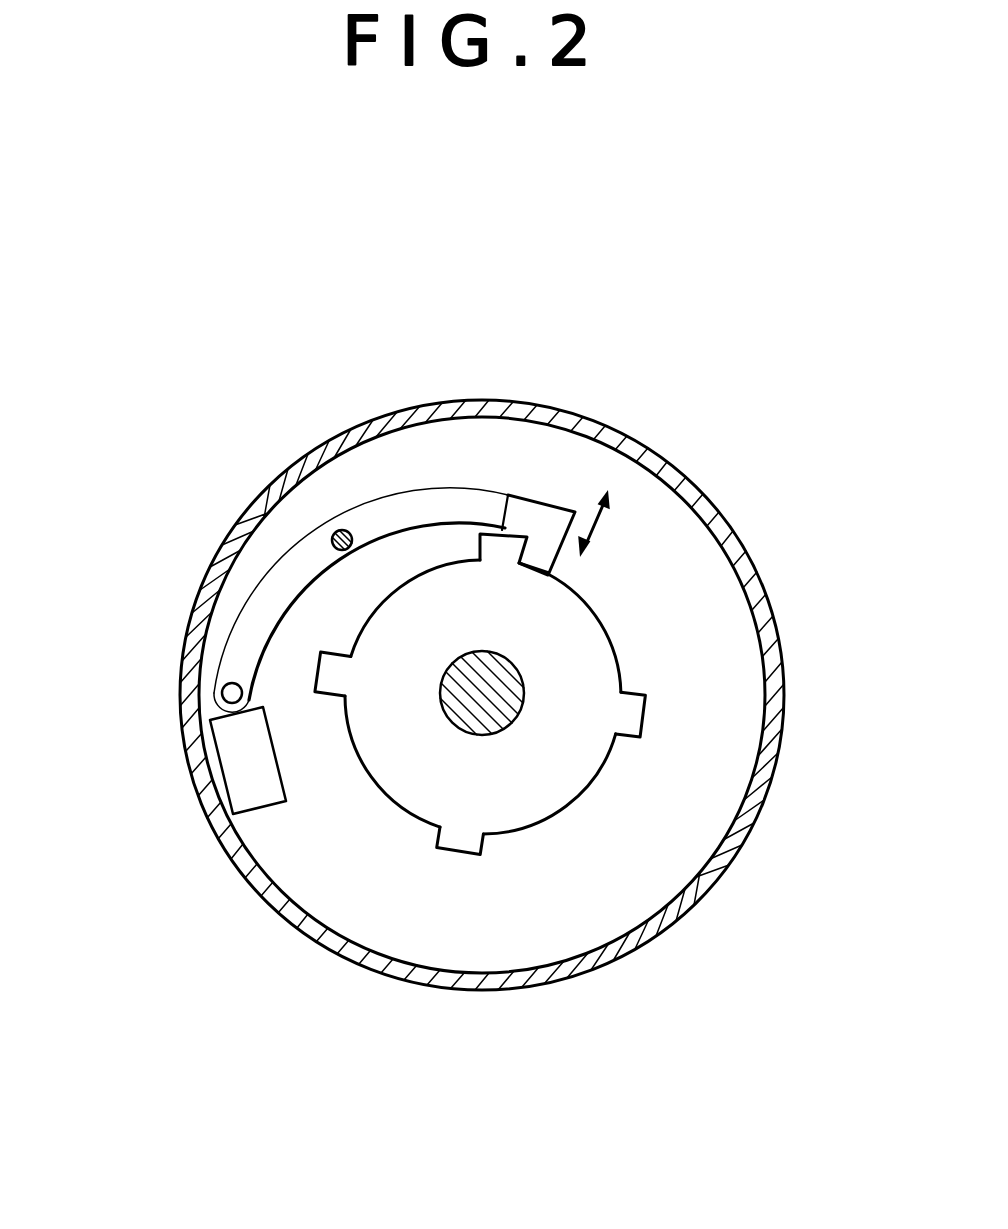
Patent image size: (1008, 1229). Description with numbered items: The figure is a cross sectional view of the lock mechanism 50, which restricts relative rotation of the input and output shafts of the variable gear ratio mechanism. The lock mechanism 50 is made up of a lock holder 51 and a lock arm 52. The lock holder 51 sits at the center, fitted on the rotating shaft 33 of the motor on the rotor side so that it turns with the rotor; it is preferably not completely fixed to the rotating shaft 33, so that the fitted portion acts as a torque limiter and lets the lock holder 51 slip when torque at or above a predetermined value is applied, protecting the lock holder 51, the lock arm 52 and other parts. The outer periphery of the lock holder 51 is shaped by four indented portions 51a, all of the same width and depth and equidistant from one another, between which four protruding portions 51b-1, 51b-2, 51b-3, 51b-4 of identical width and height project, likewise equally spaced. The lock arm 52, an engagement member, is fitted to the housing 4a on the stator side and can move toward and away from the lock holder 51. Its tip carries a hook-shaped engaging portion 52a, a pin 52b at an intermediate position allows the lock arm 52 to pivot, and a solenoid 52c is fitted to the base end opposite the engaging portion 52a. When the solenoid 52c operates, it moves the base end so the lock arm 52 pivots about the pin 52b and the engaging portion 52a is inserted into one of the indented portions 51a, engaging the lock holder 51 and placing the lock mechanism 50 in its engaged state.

The housing 4a is at (256, 496).
The rotating shaft 33 is at (517, 716).
The lock mechanism 50 is at (727, 408).
The lock holder 51 is at (466, 699).
The indented portions 51a is at (360, 612).
The protruding portion 51b-1 is at (508, 495).
The protruding portion 51b-2 is at (643, 717).
The protruding portion 51b-3 is at (453, 857).
The protruding portion 51b-4 is at (315, 658).
The lock arm 52 is at (469, 588).
The engaging portion 52a is at (550, 575).
The pin 52b is at (342, 523).
The solenoid 52c is at (240, 770).